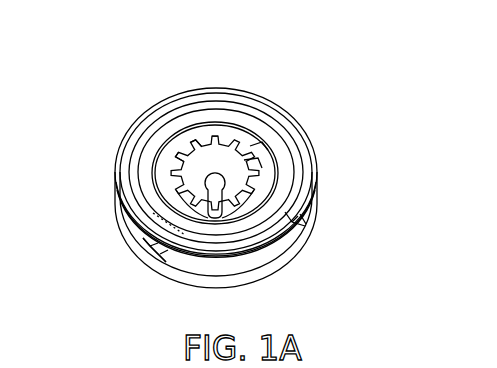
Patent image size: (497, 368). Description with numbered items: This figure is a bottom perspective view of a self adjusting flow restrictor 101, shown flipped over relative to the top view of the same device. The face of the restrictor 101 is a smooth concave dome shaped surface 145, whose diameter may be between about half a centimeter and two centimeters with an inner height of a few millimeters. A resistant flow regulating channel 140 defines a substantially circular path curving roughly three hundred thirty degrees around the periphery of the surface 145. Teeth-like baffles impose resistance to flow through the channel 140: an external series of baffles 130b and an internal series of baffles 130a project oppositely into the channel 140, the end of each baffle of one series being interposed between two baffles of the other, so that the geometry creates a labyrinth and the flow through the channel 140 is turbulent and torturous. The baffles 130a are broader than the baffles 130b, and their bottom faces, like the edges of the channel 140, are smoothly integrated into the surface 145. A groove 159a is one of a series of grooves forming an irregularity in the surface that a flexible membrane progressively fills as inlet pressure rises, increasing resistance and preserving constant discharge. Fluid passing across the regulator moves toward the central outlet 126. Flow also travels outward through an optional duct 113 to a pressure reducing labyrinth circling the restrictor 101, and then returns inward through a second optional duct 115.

The self adjusting flow restrictor 101 is at (480, 108).
The duct 113 is at (496, 218).
The second duct 115 is at (150, 250).
The outlet 126 is at (215, 187).
The internal baffles 130a is at (177, 146).
The external baffles 130b is at (215, 133).
The resistant flow regulating channel 140 is at (168, 178).
The concave dome shaped surface 145 is at (248, 122).
The groove 159a is at (252, 165).